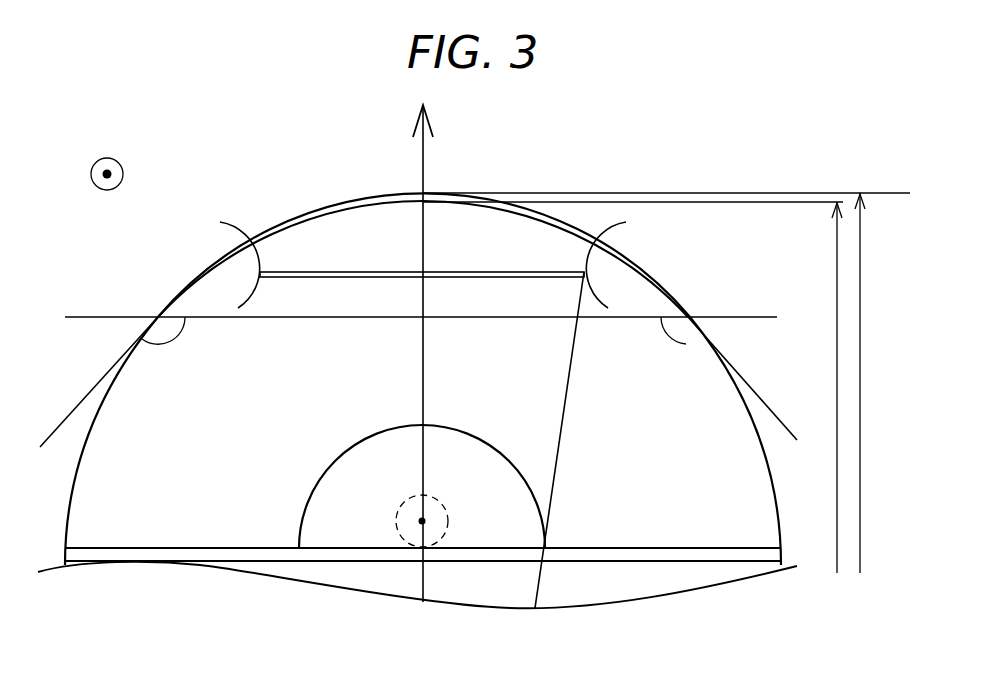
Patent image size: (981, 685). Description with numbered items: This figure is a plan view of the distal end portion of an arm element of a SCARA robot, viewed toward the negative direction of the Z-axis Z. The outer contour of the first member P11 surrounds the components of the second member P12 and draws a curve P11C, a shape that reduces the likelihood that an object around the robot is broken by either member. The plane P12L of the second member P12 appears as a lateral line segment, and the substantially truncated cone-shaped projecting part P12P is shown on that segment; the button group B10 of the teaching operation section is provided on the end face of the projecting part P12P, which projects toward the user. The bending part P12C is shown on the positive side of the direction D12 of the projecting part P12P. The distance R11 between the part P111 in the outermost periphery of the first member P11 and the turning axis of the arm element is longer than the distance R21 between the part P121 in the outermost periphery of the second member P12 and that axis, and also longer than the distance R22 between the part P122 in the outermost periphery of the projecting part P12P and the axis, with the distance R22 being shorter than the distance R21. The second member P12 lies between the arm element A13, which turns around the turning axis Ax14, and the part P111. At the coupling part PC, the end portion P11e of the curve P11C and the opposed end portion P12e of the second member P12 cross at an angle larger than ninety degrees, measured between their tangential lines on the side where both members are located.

The Z-axis Z is at (120, 175).
The coupling part PC is at (695, 319).
The first member P11 is at (775, 513).
The second member P12 is at (620, 316).
The end portion of the curve P11C P11e is at (705, 328).
The direction D12 is at (402, 353).
The part in the outermost periphery of the projecting part P122 is at (422, 256).
The part in the outermost periphery of the second member P121 is at (422, 200).
The bending part P12C is at (308, 253).
The part in the outermost periphery of the first member P111 is at (423, 192).
The button group B10 is at (540, 271).
The curve P11C is at (657, 278).
The end portion of the second member P12e is at (667, 312).
The projecting part P12P is at (215, 262).
The plane P12L is at (175, 297).
The distance R22 is at (581, 440).
The turning axis Ax14 is at (428, 519).
The arm element A13 is at (395, 518).
The distance R21 is at (633, 387).
The distance R11 is at (886, 383).